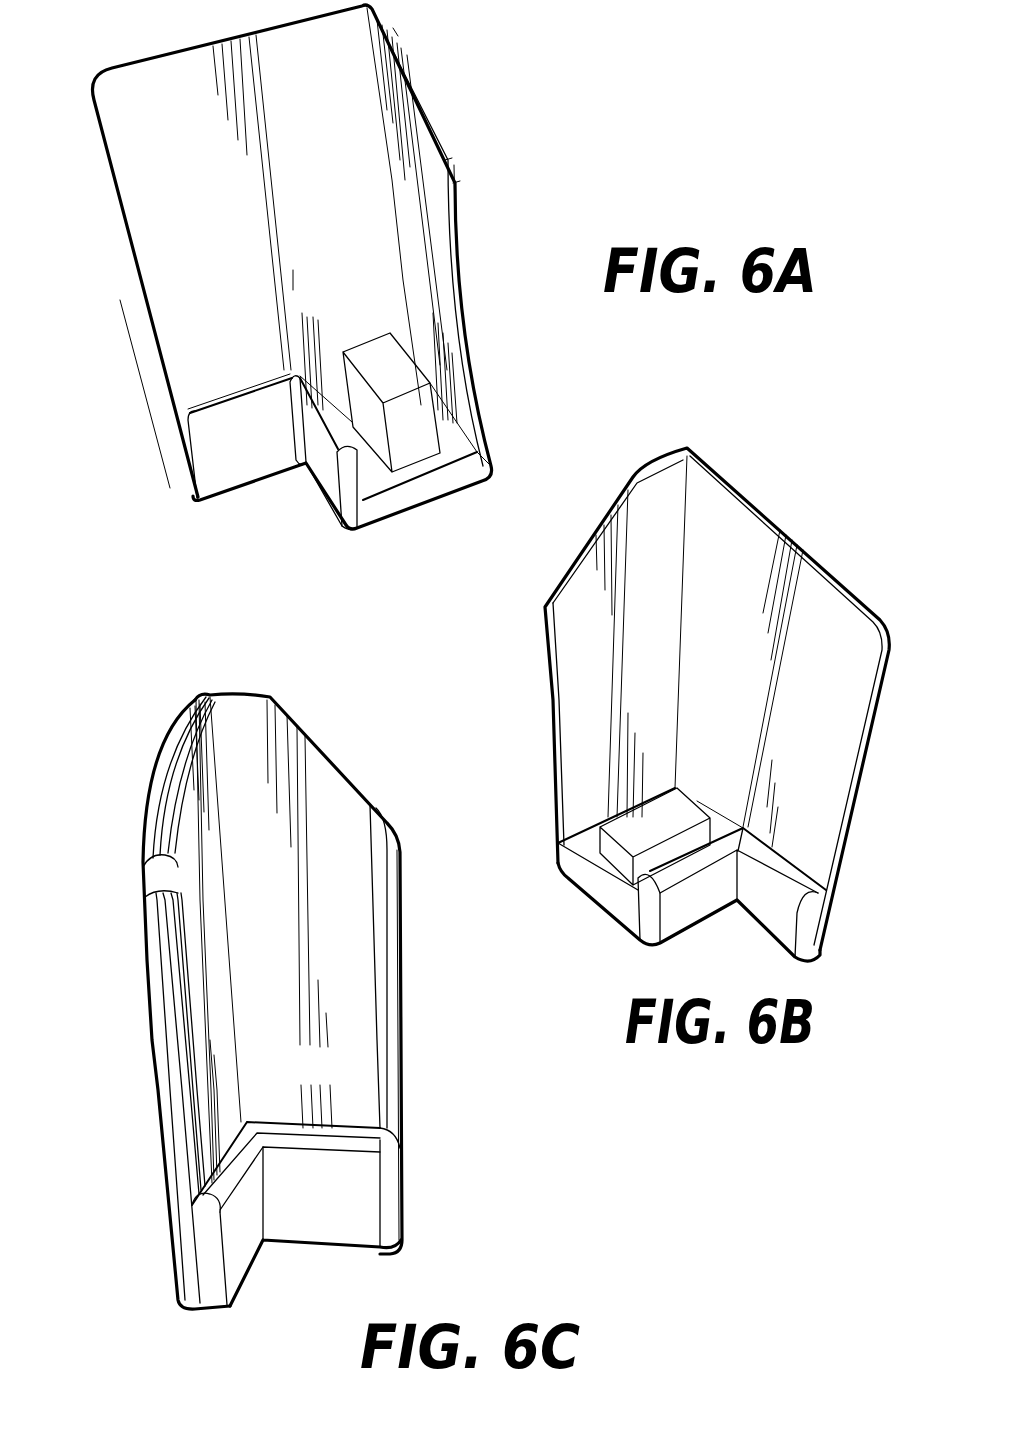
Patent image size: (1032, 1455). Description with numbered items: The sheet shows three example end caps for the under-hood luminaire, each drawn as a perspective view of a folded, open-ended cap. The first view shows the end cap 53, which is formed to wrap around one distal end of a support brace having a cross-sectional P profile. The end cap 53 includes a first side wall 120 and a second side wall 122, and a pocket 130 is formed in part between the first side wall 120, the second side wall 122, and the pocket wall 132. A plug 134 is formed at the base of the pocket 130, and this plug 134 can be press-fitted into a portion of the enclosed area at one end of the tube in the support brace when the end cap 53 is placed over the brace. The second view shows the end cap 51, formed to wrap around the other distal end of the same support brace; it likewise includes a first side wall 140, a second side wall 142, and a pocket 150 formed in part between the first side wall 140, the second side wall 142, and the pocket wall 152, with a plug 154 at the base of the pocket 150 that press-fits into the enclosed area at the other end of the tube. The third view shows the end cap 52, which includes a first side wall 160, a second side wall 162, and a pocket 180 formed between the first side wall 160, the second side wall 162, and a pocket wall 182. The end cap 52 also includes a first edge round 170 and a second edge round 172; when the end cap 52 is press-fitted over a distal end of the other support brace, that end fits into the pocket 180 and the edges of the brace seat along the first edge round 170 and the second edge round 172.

In FIG. 6A, the end cap 53 is at (104, 46).
In FIG. 6A, the first side wall 120 is at (135, 218).
In FIG. 6A, the second side wall 122 is at (445, 218).
In FIG. 6A, the pocket 130 is at (453, 458).
In FIG. 6A, the pocket wall 132 is at (262, 470).
In FIG. 6A, the plug 134 is at (362, 353).
In FIG. 6B, the end cap 51 is at (669, 414).
In FIG. 6B, the first side wall 140 is at (862, 722).
In FIG. 6B, the second side wall 142 is at (556, 644).
In FIG. 6B, the pocket 150 is at (584, 845).
In FIG. 6B, the pocket wall 152 is at (706, 906).
In FIG. 6B, the plug 154 is at (680, 805).
In FIG. 6C, the end cap 52 is at (79, 738).
In FIG. 6C, the first side wall 160 is at (156, 782).
In FIG. 6C, the second side wall 162 is at (310, 750).
In FIG. 6C, the first edge round 170 is at (151, 918).
In FIG. 6C, the second edge round 172 is at (400, 857).
In FIG. 6C, the pocket 180 is at (313, 1110).
In FIG. 6C, the pocket wall 182 is at (320, 1232).